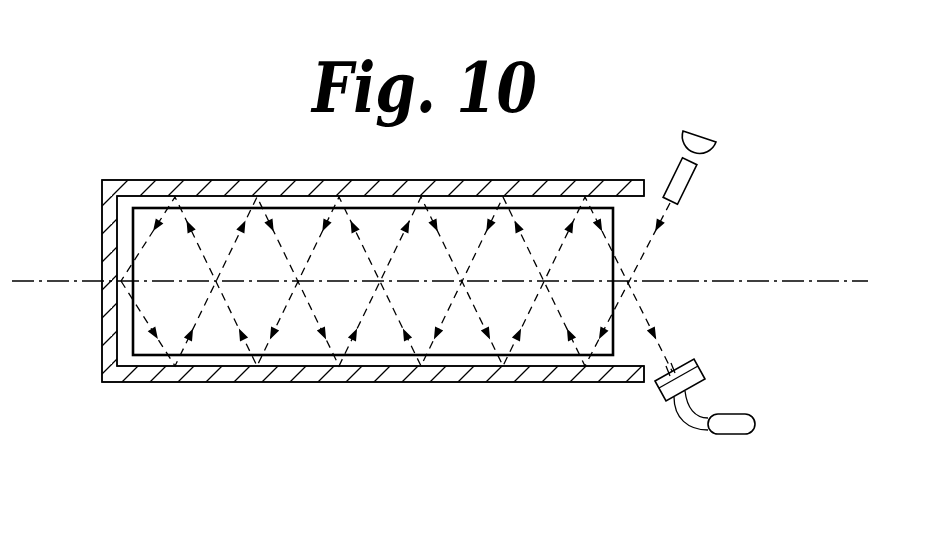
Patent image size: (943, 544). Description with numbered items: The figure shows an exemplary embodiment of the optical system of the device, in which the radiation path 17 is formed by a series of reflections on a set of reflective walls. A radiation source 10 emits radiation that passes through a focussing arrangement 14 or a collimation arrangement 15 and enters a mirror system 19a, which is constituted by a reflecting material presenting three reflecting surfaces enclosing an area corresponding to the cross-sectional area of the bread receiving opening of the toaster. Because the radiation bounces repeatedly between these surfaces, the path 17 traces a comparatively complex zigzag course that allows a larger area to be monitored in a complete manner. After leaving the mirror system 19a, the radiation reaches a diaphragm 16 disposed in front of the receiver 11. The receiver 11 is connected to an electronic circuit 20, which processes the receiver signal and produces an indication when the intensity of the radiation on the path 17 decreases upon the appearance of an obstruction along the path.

The light source 10 is at (716, 142).
The focussing arrangement 14 is at (724, 181).
The collimation arrangement 15 is at (690, 180).
The path 17 is at (665, 210).
The mirror system 19a is at (236, 383).
The diaphragm 16 is at (671, 367).
The receiver 11 is at (704, 380).
The electronic circuit 20 is at (733, 434).